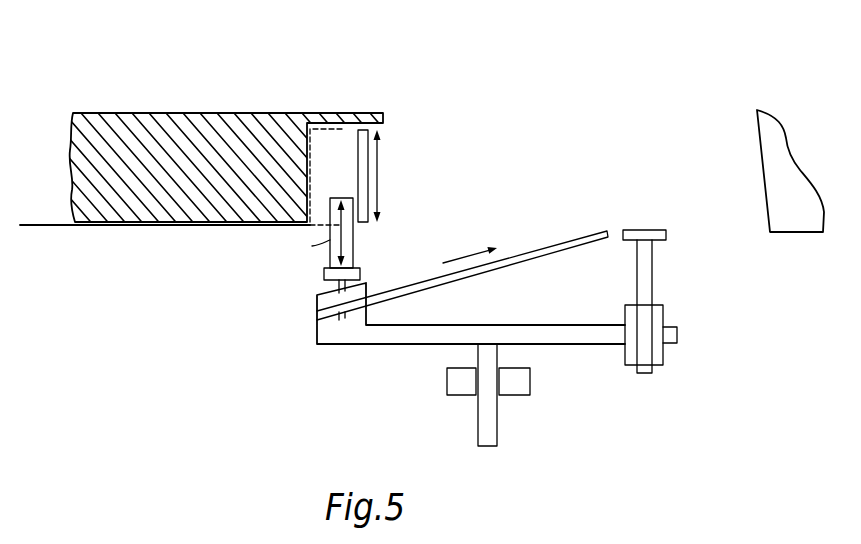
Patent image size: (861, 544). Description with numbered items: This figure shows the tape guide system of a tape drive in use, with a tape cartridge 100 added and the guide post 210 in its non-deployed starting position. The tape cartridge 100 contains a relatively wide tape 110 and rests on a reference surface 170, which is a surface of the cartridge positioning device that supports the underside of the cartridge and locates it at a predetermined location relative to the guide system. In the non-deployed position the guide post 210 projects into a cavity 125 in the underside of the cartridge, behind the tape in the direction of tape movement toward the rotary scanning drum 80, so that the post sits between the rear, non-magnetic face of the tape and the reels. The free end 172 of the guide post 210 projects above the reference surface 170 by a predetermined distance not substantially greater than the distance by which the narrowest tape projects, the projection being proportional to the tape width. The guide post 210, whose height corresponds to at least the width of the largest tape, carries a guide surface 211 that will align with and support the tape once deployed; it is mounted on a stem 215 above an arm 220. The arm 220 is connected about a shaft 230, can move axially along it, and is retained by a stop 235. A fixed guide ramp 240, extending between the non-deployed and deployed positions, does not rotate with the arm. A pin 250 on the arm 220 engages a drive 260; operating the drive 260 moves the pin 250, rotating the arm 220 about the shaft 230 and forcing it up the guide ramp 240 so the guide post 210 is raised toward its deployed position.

The rotary scanning drum 80 is at (797, 148).
The tape cartridge 100 is at (172, 120).
The tape 110 is at (366, 157).
The cavity 125 is at (330, 118).
The reference surface 170 is at (47, 226).
The free end 172 is at (345, 198).
The guide post 210 is at (353, 262).
The guide surface 211 is at (353, 238).
The stem 215 is at (320, 274).
The arm 220 is at (575, 346).
The shaft 230 is at (645, 275).
The stop 235 is at (643, 231).
The guide ramp 240 is at (553, 242).
The pin 250 is at (483, 437).
The drive 260 is at (458, 382).